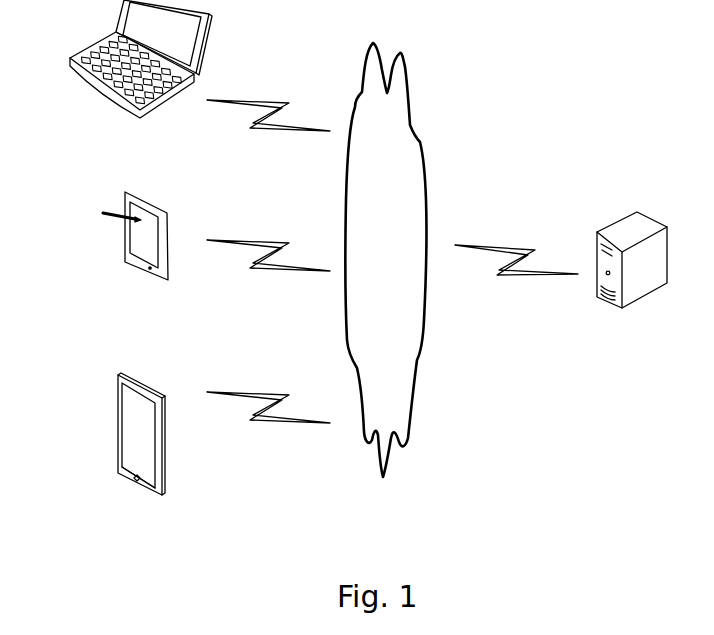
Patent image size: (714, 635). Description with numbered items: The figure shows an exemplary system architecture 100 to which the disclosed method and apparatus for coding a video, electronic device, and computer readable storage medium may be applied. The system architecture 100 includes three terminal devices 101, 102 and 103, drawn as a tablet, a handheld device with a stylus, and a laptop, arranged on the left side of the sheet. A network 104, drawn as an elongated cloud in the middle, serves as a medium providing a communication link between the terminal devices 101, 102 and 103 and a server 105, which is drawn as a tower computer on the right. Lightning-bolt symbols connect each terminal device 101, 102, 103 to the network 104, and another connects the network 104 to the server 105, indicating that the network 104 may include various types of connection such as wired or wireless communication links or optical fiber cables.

The system architecture 100 is at (660, 23).
The terminal device 101 is at (141, 456).
The terminal device 102 is at (135, 255).
The terminal device 103 is at (141, 74).
The network 104 is at (385, 260).
The server 105 is at (632, 283).